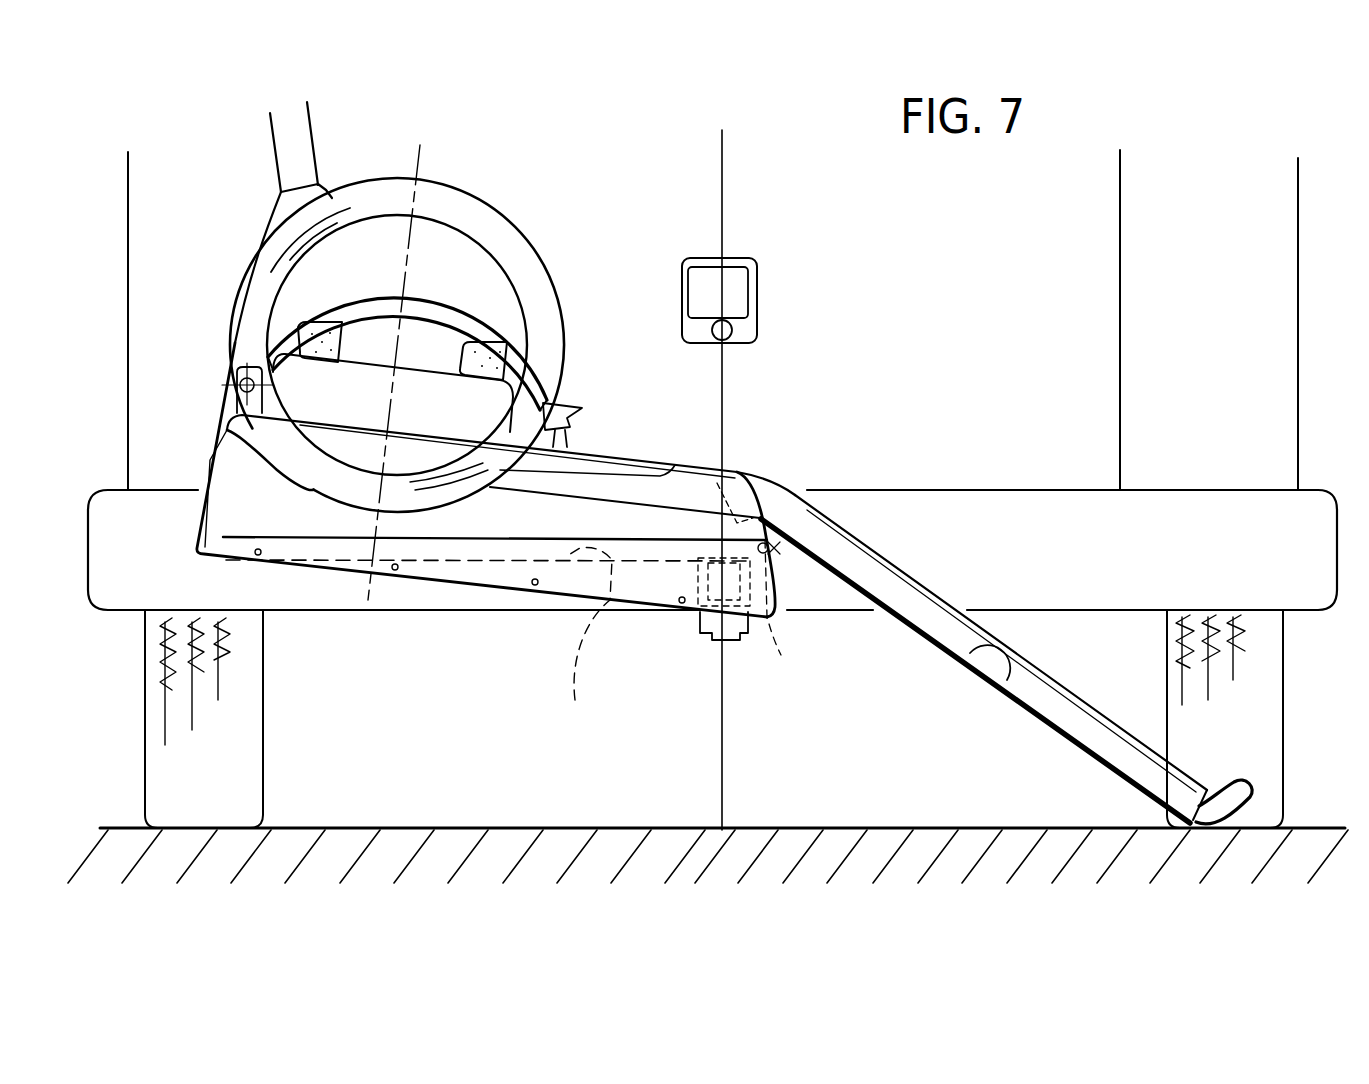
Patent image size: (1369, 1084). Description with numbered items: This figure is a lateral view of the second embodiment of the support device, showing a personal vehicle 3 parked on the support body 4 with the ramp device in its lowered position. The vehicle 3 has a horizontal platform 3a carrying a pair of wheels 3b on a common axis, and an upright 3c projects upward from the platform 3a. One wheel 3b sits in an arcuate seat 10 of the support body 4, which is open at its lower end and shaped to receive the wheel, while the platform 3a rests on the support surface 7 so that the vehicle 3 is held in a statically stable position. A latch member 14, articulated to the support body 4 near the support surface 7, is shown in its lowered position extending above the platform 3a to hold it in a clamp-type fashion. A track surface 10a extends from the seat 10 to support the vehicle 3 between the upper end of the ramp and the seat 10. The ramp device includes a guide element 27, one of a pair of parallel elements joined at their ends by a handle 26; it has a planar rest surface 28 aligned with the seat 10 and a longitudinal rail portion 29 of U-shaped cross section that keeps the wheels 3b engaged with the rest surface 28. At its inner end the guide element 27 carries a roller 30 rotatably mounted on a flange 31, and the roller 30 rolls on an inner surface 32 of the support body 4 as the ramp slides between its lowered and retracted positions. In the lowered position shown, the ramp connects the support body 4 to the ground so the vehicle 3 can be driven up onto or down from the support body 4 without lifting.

The personal vehicle 3 is at (260, 191).
The platform 3a is at (212, 457).
The wheels 3b is at (504, 219).
The upright 3c is at (313, 132).
The support body 4 is at (727, 431).
The support surface 7 is at (400, 425).
The seat 10 is at (675, 465).
The track surface 10a is at (686, 512).
The latch member 14 is at (470, 308).
The handle 26 is at (1247, 782).
The guide element 27 is at (1052, 648).
The rest surface 28 is at (1000, 690).
The rail portion 29 is at (913, 577).
The roller 30 is at (759, 588).
The flange 31 is at (778, 550).
The inner surface 32 is at (587, 643).